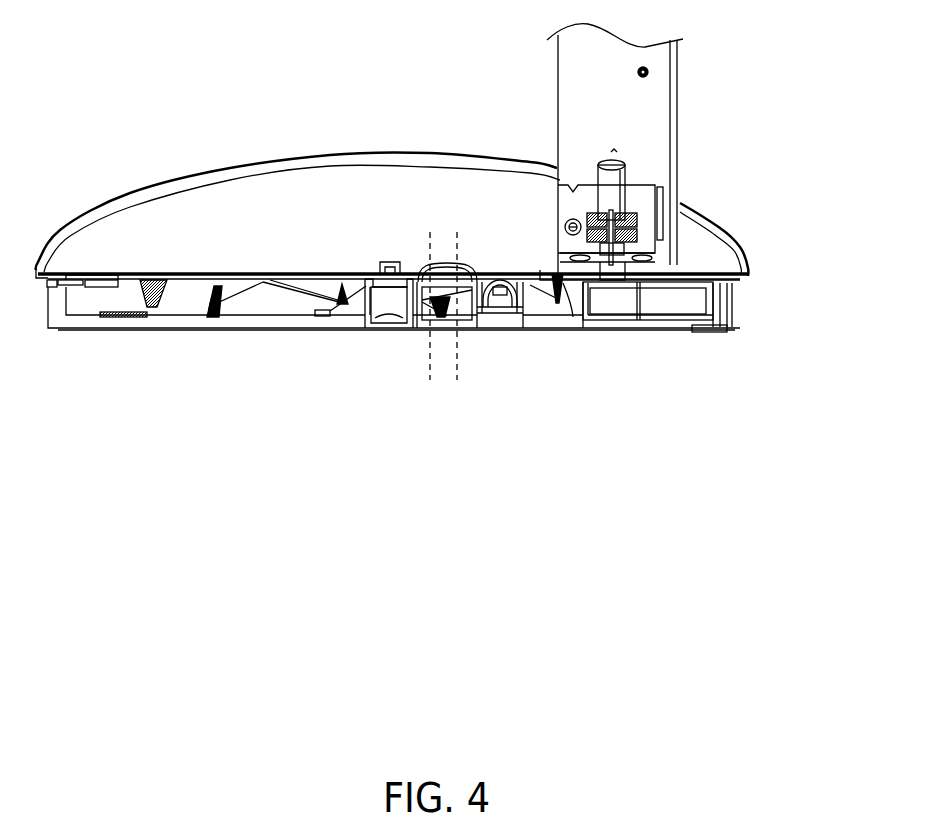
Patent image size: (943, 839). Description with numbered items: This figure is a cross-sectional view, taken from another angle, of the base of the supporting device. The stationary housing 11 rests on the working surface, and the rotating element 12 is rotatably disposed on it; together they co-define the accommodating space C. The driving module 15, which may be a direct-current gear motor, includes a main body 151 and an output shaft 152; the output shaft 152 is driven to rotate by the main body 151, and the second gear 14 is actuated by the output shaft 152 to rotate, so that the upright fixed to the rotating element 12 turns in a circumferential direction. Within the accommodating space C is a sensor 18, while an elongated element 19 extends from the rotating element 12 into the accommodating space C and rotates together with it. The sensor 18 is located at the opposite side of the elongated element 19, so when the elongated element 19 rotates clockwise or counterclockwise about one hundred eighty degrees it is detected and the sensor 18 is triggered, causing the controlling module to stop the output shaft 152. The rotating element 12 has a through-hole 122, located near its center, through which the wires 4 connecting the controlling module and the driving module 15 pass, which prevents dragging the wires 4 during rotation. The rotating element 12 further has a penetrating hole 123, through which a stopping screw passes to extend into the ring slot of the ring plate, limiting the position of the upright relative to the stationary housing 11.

The stationary housing 11 is at (733, 312).
The rotating element 12 is at (720, 255).
The penetrating hole 123 is at (76, 256).
The through-hole 122 is at (448, 232).
The wires 4 is at (441, 372).
The sensor 18 is at (216, 312).
The accommodating space C is at (344, 302).
The elongated element 19 is at (559, 305).
The second gear 14 is at (626, 305).
The driving module 15 is at (689, 205).
The main body 151 is at (622, 163).
The output shaft 152 is at (638, 226).